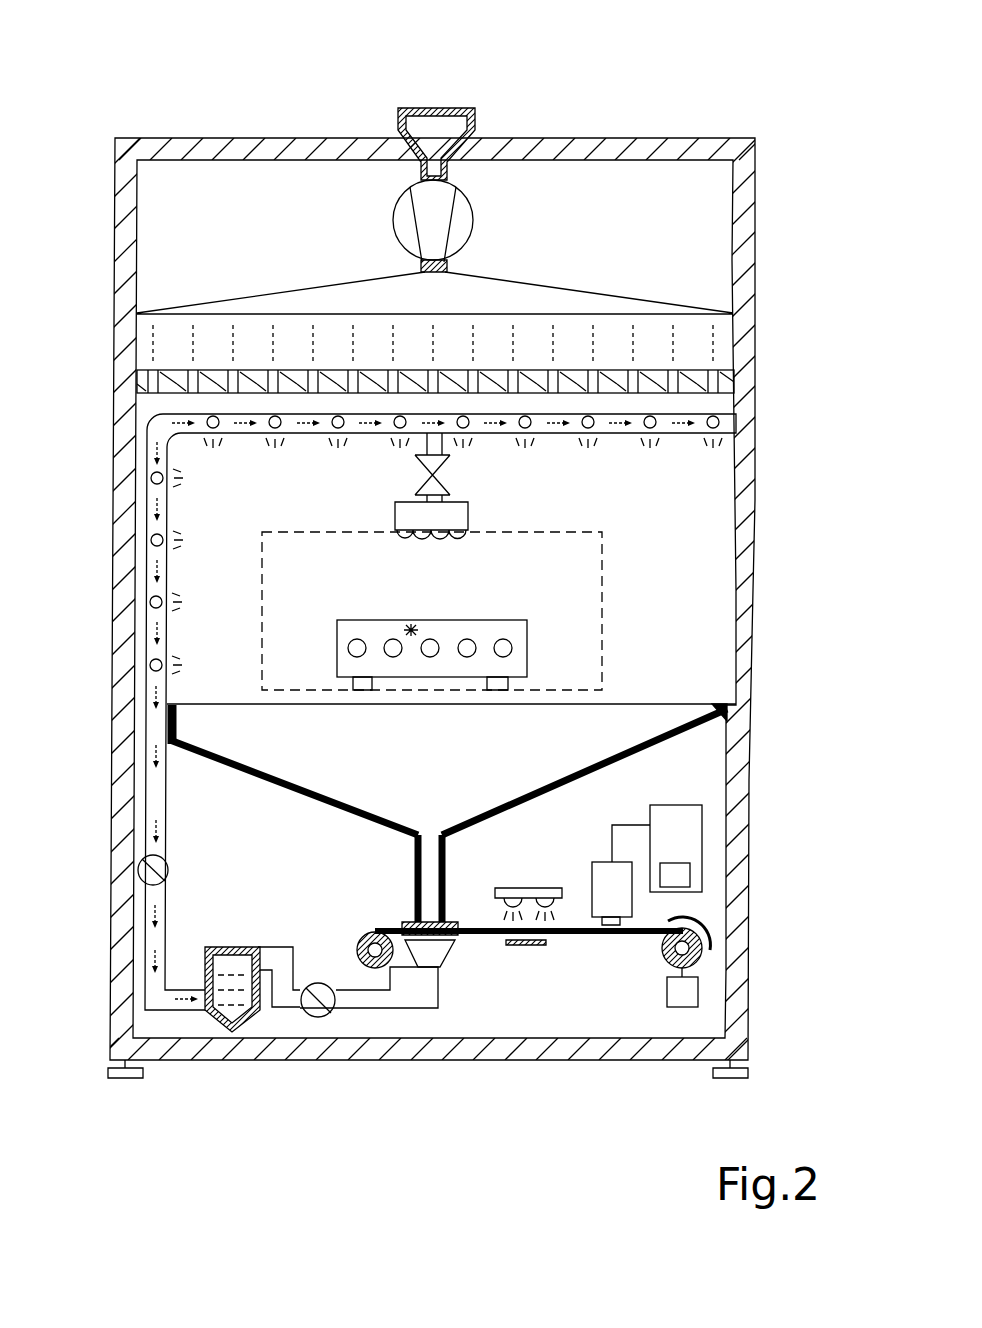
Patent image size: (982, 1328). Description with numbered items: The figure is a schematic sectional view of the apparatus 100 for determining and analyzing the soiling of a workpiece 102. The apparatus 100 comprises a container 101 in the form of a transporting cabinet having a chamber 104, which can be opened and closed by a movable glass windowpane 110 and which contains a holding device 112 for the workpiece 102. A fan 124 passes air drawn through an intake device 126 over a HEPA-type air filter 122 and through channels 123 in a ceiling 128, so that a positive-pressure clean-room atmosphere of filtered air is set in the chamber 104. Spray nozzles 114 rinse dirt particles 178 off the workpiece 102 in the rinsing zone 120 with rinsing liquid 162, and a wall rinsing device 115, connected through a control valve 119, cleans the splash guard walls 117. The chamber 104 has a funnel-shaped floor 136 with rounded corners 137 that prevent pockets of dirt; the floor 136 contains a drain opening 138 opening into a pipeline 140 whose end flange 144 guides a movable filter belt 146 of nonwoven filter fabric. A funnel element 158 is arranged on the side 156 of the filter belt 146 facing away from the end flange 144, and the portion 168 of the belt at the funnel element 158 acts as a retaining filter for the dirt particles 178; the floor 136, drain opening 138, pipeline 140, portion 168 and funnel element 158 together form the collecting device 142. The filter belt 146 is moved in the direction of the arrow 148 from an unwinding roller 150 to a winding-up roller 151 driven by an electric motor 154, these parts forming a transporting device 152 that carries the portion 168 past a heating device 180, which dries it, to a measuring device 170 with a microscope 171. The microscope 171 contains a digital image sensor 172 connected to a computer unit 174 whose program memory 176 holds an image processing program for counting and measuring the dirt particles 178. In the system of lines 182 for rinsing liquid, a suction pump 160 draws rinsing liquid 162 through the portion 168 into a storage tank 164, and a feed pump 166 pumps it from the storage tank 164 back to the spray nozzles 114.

The apparatus 100 is at (772, 103).
The container 101 is at (115, 211).
The workpiece 102 is at (482, 620).
The chamber 104 is at (698, 560).
The glass windowpane 110 is at (755, 456).
The holding device 112 is at (364, 690).
The spray nozzles 114 is at (333, 429).
The wall rinsing device 115 is at (400, 523).
The walls 117 is at (134, 645).
The control valve 119 is at (418, 467).
The rinsing zone 120 is at (605, 609).
The air filter 122 is at (737, 345).
The channels 123 is at (740, 378).
The fan 124 is at (475, 216).
The intake device 126 is at (398, 122).
The ceiling 128 is at (137, 385).
The funnel-shaped floor 136 is at (552, 787).
The rounded corners 137 is at (178, 734).
The drain opening 138 is at (414, 840).
The pipeline 140 is at (414, 887).
The collecting device 142 is at (300, 825).
The end flange 144 is at (457, 916).
The filter belt 146 is at (571, 937).
The arrow 148 is at (528, 947).
The unwinding roller 150 is at (388, 975).
The winding-up roller 151 is at (668, 955).
The transporting device 152 is at (415, 1110).
The electric motor 154 is at (682, 1007).
The side of the filter belt 156 is at (602, 938).
The funnel element 158 is at (402, 933).
The suction pump 160 is at (318, 1017).
The rinsing liquid 162 is at (273, 432).
The storage tank 164 is at (206, 960).
The feed pump 166 is at (138, 870).
The portion of the filter belt 168 is at (398, 938).
The measuring device 170 is at (803, 748).
The microscope 171 is at (598, 862).
The digital image sensor 172 is at (598, 878).
The computer unit 174 is at (702, 825).
The program memory 176 is at (690, 875).
The dirt particles 178 is at (412, 628).
The heating device 180 is at (529, 888).
The system of lines 182 is at (146, 795).